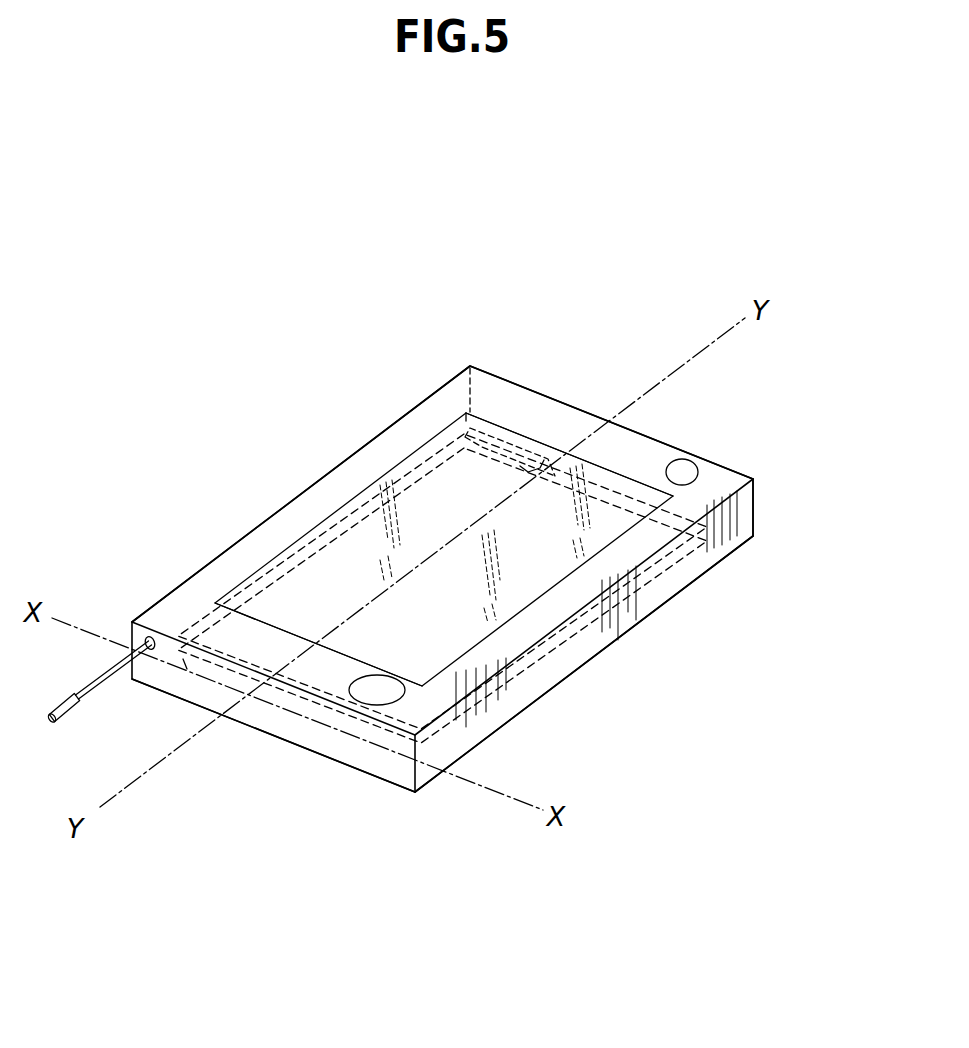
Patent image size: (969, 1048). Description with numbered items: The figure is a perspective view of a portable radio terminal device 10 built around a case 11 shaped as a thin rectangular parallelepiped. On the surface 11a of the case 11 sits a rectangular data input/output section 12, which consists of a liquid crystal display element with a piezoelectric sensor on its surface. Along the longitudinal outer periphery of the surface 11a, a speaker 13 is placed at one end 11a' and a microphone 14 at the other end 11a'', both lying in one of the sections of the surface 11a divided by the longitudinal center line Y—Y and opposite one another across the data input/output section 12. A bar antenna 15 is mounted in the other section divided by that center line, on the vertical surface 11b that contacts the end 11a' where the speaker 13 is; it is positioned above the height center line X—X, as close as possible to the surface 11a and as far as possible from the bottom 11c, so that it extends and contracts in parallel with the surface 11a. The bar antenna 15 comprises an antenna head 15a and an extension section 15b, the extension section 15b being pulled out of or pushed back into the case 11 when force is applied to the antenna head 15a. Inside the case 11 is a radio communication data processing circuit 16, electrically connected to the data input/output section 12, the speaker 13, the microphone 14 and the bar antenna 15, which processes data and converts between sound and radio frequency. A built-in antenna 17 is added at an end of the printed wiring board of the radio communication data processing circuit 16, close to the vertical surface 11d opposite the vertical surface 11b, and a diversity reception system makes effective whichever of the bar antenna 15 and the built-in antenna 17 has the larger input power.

The portable radio terminal device 10 is at (317, 342).
The case 11 is at (425, 412).
The surface 11a is at (451, 494).
The end 11a' is at (318, 718).
The other end 11a'' is at (569, 394).
The vertical surface 11b is at (250, 700).
The bottom 11c is at (513, 727).
The vertical surface 11d is at (755, 505).
The data input/output section 12 is at (317, 600).
The speaker 13 is at (378, 697).
The microphone 14 is at (686, 475).
The bar antenna 15 is at (100, 673).
The antenna head 15a is at (66, 730).
The extension section 15b is at (100, 676).
The radio communication data processing circuit 16 is at (585, 648).
The built-in antenna 17 is at (528, 468).